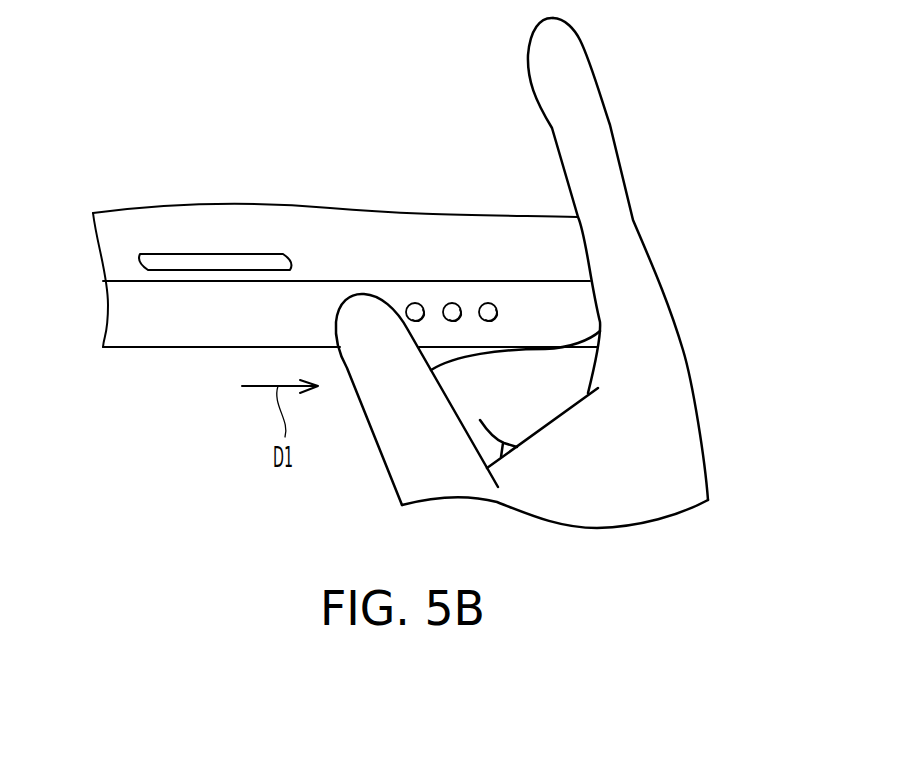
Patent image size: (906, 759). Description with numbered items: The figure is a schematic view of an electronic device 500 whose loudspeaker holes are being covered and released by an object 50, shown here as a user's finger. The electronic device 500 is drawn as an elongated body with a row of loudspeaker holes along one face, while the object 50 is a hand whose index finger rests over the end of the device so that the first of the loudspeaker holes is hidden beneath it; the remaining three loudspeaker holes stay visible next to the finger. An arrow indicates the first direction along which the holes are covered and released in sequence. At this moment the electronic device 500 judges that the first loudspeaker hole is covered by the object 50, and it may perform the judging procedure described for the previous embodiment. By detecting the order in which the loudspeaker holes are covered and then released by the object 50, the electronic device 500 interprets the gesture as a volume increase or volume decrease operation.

The electronic device 500 is at (330, 237).
The object 50 is at (640, 263).